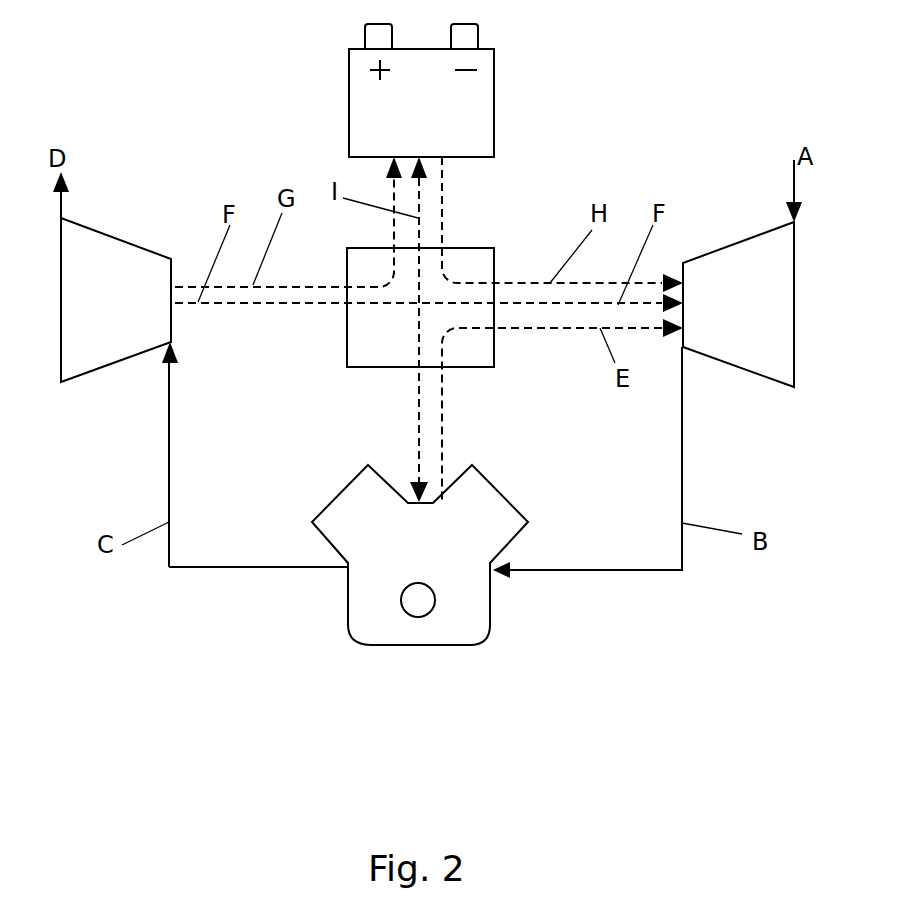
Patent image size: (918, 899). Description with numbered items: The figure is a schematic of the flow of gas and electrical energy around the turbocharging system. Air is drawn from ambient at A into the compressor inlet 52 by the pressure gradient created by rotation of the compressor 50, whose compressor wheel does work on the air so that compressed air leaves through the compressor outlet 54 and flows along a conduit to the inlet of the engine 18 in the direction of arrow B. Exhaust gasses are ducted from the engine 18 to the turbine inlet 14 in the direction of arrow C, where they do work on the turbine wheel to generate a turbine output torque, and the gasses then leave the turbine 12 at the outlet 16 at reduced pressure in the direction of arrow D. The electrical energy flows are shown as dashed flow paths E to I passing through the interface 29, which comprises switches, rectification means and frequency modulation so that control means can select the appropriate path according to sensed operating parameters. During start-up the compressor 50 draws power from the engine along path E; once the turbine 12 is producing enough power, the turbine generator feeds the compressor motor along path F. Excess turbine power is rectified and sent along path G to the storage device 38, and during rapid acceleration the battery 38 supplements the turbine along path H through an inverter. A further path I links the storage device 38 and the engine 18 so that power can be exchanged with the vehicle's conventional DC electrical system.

The turbine 12 is at (74, 325).
The turbine inlet 14 is at (168, 343).
The outlet 16 is at (61, 218).
The engine 18 is at (472, 617).
The interface 29 is at (473, 248).
The storage device 38 is at (494, 87).
The compressor 50 is at (752, 352).
The compressor inlet 52 is at (790, 220).
The compressor outlet 54 is at (683, 350).